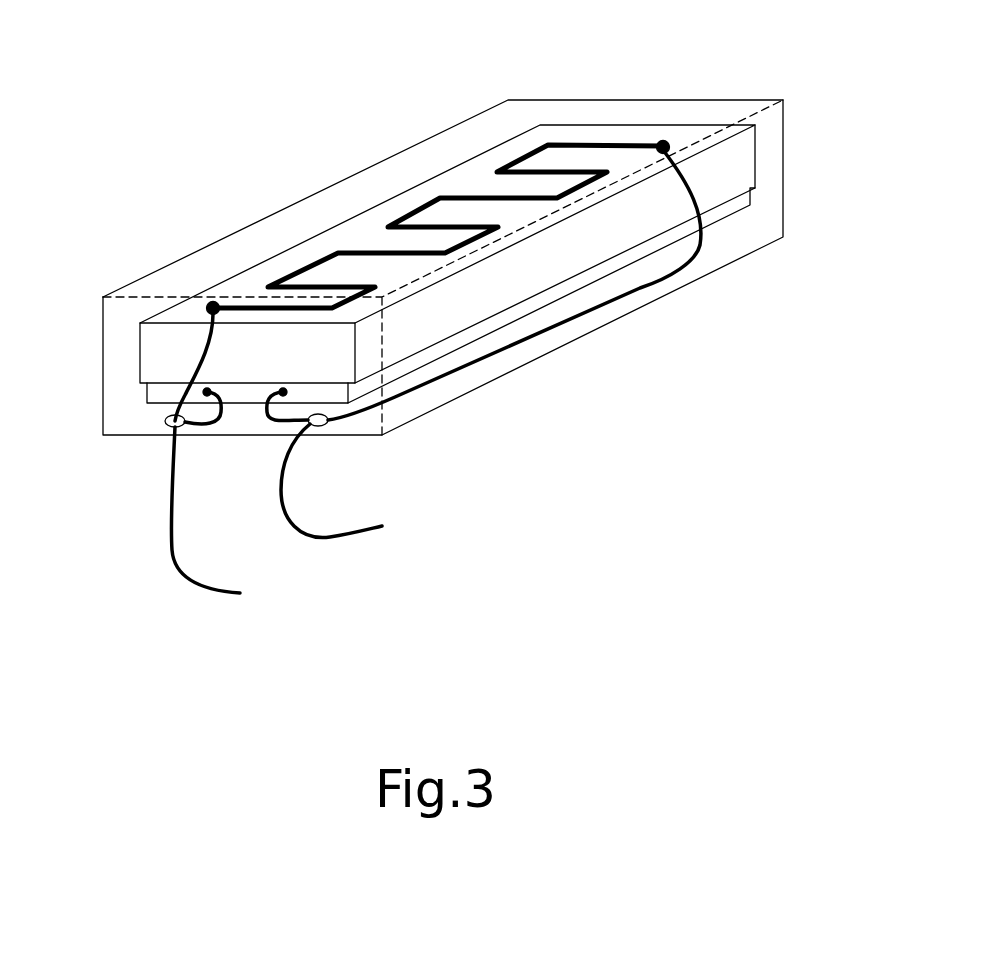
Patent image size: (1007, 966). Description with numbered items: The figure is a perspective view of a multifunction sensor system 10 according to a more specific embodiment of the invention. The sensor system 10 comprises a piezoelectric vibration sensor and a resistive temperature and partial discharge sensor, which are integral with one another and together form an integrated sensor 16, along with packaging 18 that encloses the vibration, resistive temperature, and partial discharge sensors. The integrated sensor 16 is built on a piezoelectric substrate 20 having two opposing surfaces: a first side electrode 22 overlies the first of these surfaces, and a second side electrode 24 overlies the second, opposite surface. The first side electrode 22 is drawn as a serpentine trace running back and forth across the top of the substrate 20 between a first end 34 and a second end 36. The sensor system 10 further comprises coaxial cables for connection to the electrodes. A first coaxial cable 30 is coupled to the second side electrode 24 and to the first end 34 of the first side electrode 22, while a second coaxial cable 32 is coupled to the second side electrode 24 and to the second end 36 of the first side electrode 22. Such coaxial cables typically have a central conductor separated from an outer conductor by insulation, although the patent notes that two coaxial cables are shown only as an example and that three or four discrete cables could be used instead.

The sensor system 10 is at (215, 87).
The integrated sensor 16 is at (608, 312).
The packaging 18 is at (748, 237).
The piezoelectric substrate 20 is at (743, 168).
The first side electrode 22 is at (428, 205).
The second side electrode 24 is at (538, 300).
The first coaxial cable 30 is at (168, 499).
The second coaxial cable 32 is at (282, 486).
The first end of first side electrode 34 is at (210, 307).
The second end of first side electrode 36 is at (665, 143).